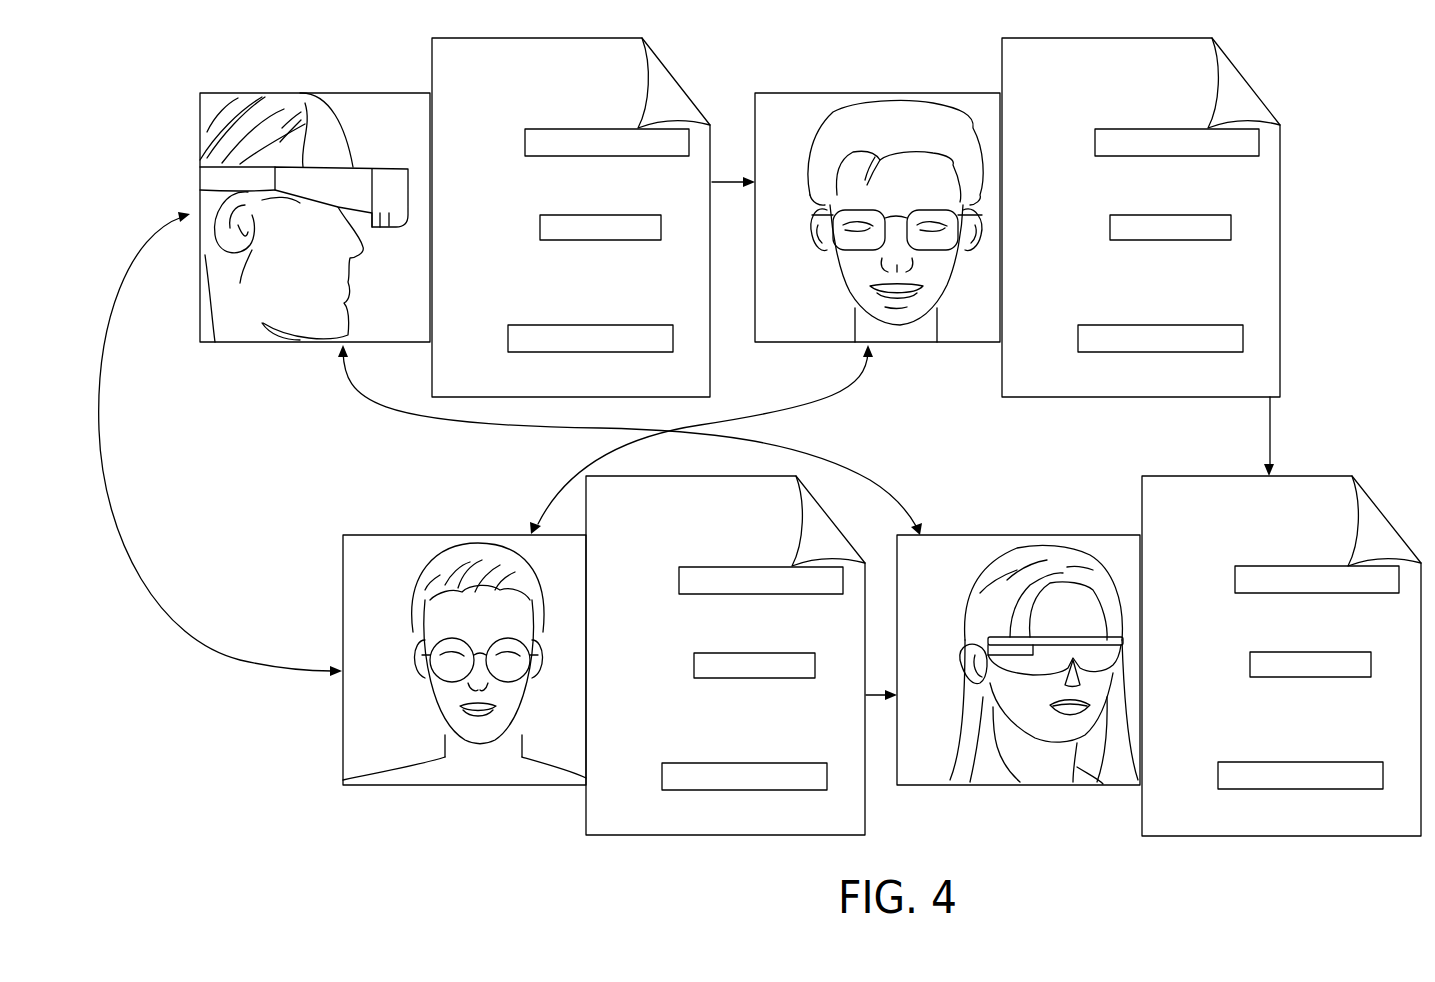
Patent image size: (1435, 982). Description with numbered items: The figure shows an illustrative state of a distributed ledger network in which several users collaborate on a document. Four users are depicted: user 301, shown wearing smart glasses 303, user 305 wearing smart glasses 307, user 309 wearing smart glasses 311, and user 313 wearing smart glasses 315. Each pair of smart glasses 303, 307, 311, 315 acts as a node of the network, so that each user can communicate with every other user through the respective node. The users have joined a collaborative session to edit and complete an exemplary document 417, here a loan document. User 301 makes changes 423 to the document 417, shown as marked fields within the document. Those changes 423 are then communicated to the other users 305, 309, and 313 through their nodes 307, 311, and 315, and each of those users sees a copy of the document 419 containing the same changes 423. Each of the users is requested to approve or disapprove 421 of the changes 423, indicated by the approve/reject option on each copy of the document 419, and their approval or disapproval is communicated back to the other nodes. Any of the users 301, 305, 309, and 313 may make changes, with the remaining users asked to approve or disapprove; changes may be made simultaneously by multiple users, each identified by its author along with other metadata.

The user 301 is at (315, 199).
The smart glasses 303 is at (380, 228).
The user 305 is at (876, 200).
The smart glasses 307 is at (830, 250).
The user 309 is at (1018, 642).
The smart glasses 311 is at (975, 660).
The user 313 is at (464, 642).
The smart glasses 315 is at (433, 672).
The document 417 is at (572, 38).
The document 419 is at (1097, 38).
The approve/disapprove 421 is at (848, 815).
The changes 423 is at (607, 156).